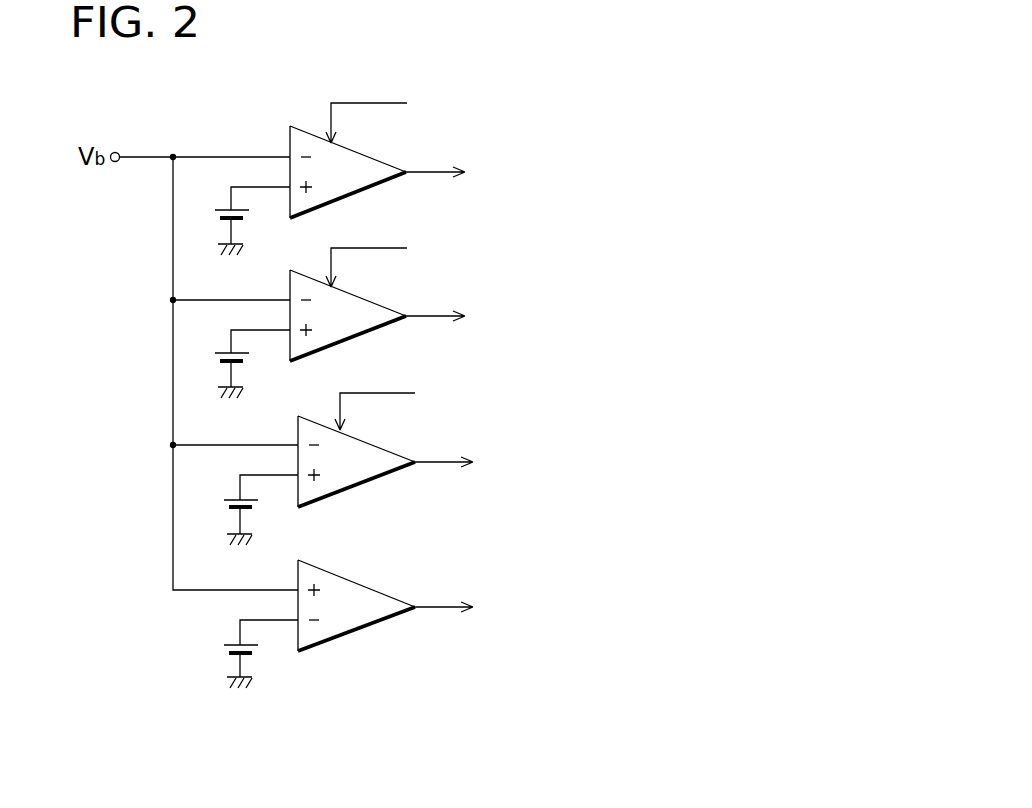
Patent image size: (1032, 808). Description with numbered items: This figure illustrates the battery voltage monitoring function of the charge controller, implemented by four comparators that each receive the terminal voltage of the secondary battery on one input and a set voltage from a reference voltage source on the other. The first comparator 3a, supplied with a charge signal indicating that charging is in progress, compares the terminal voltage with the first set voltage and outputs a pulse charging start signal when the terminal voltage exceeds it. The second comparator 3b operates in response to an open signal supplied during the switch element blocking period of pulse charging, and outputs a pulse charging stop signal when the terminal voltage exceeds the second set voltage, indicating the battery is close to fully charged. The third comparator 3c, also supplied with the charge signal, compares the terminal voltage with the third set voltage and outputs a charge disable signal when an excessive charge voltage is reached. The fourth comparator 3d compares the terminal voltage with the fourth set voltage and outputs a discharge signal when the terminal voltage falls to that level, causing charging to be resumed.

The third comparator 3c is at (290, 143).
The second comparator 3b is at (290, 288).
The first comparator 3a is at (298, 435).
The fourth comparator 3d is at (298, 578).